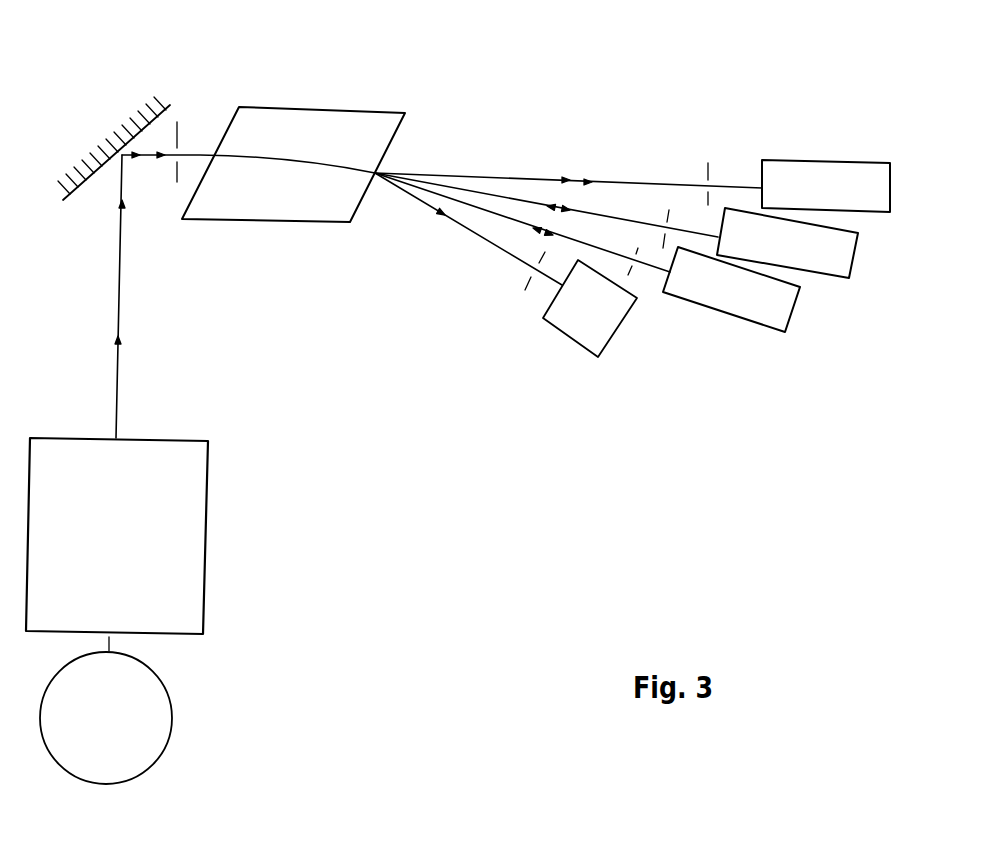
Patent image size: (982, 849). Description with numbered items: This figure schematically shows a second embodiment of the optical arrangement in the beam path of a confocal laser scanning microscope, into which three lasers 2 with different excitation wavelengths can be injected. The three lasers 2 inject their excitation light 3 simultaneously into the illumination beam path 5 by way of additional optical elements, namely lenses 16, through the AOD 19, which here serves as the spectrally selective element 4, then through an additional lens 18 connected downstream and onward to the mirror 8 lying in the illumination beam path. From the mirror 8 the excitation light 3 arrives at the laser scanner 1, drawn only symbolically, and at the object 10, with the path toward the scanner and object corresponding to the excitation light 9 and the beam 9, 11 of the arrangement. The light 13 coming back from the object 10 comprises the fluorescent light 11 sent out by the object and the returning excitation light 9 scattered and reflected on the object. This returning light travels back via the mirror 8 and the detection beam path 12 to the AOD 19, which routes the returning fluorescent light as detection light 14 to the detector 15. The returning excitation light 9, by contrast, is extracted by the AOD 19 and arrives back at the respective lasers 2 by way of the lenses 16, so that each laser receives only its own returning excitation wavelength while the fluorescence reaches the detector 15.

The laser scanner 1 is at (203, 575).
The lasers 2 is at (865, 217).
The excitation light 3 is at (500, 213).
The spectrally selective element 4 is at (312, 105).
The illumination beam path 5 is at (140, 160).
The mirror 8 is at (130, 126).
The returning excitation light 9 is at (184, 296).
The object 10 is at (106, 718).
The fluorescent light 11 is at (120, 298).
The detection beam path 12 is at (420, 214).
The light coming from object 13 is at (200, 152).
The detection light 14 is at (482, 243).
The detector 15 is at (567, 335).
The lenses 16 is at (710, 172).
The additional lens 18 is at (178, 131).
The AOD 19 is at (293, 125).